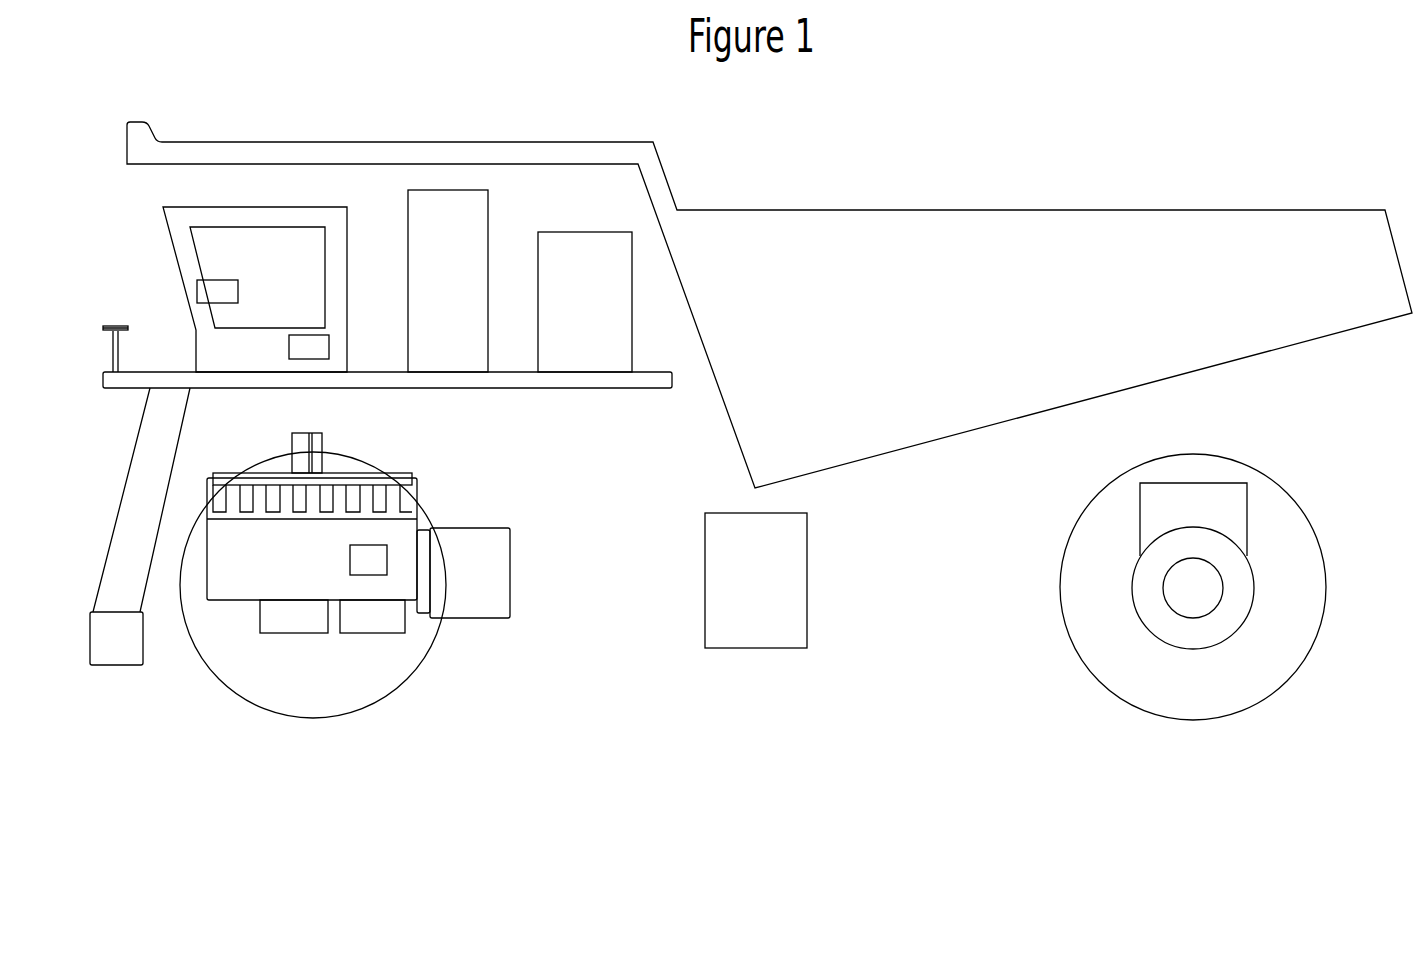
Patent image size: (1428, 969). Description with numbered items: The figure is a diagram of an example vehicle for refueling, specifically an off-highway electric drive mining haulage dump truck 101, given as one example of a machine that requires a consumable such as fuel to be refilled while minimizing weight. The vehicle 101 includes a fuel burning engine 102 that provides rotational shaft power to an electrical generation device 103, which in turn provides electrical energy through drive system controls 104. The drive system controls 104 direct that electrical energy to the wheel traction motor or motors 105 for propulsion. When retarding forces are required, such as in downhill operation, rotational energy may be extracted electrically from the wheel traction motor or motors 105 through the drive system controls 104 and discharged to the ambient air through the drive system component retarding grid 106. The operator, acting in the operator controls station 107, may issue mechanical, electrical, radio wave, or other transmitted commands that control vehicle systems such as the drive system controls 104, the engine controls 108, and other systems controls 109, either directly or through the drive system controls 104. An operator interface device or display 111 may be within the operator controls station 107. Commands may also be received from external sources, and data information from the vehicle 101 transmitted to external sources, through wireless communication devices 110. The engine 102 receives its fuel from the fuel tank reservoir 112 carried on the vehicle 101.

The off-highway electric drive mining haulage dump truck 101 is at (538, 883).
The fuel burning engine 102 is at (243, 585).
The electrical generation device 103 is at (485, 537).
The drive system controls 104 is at (448, 215).
The wheel traction motor 105 is at (1197, 630).
The drive system component retarding grid 106 is at (562, 290).
The operator controls station 107 is at (240, 217).
The engine controls 108 is at (363, 563).
The other systems controls 109 is at (303, 345).
The wireless communication devices 110 is at (110, 325).
The operator interface device or display 111 is at (211, 285).
The fuel tank reservoir 112 is at (765, 633).